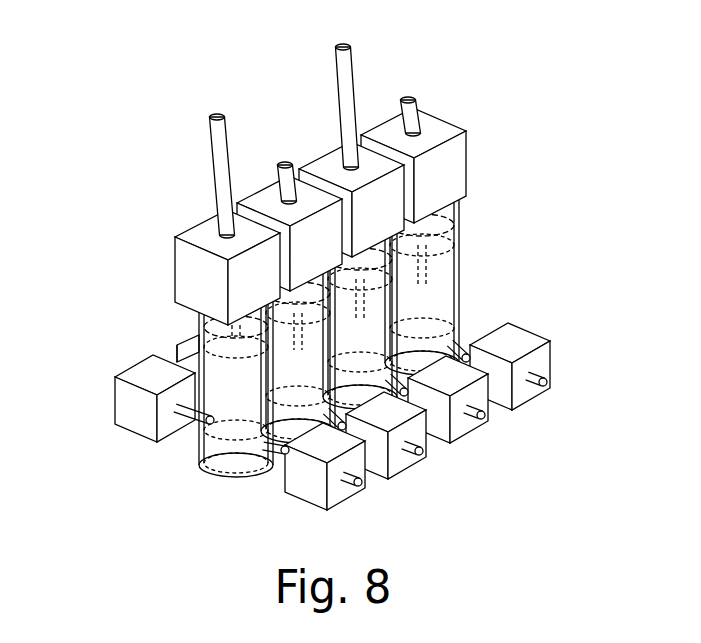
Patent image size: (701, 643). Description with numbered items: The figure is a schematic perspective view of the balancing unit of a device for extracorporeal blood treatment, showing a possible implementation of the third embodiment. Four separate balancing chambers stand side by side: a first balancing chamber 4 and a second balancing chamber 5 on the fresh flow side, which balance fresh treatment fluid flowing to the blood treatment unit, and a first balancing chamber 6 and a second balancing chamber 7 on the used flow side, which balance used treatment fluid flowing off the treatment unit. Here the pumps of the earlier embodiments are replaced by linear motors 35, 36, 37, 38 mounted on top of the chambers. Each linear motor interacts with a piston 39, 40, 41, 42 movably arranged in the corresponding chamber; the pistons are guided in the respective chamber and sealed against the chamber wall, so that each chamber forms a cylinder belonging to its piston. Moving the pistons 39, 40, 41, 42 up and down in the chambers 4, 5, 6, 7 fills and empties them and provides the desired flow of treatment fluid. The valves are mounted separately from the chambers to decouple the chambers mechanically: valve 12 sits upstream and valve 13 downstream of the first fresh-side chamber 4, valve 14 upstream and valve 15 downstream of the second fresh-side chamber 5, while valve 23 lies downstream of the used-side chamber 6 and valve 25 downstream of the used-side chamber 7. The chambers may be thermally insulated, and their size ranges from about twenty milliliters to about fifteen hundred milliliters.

The first balancing chamber on the fresh flow side 4 is at (176, 364).
The second balancing chamber on the fresh flow side 5 is at (436, 320).
The first balancing chamber on the used flow side 6 is at (382, 293).
The second balancing chamber on the used flow side 7 is at (489, 279).
The valve 12 is at (130, 412).
The valve 13 is at (300, 480).
The valve 14 is at (180, 347).
The valve 15 is at (400, 462).
The valve 23 is at (460, 432).
The valve 25 is at (522, 398).
The linear motor 35 is at (200, 235).
The linear motor 36 is at (262, 208).
The linear motor 37 is at (305, 162).
The linear motor 38 is at (386, 130).
The piston 39 is at (197, 330).
The piston 40 is at (200, 296).
The piston 41 is at (392, 260).
The piston 42 is at (330, 354).